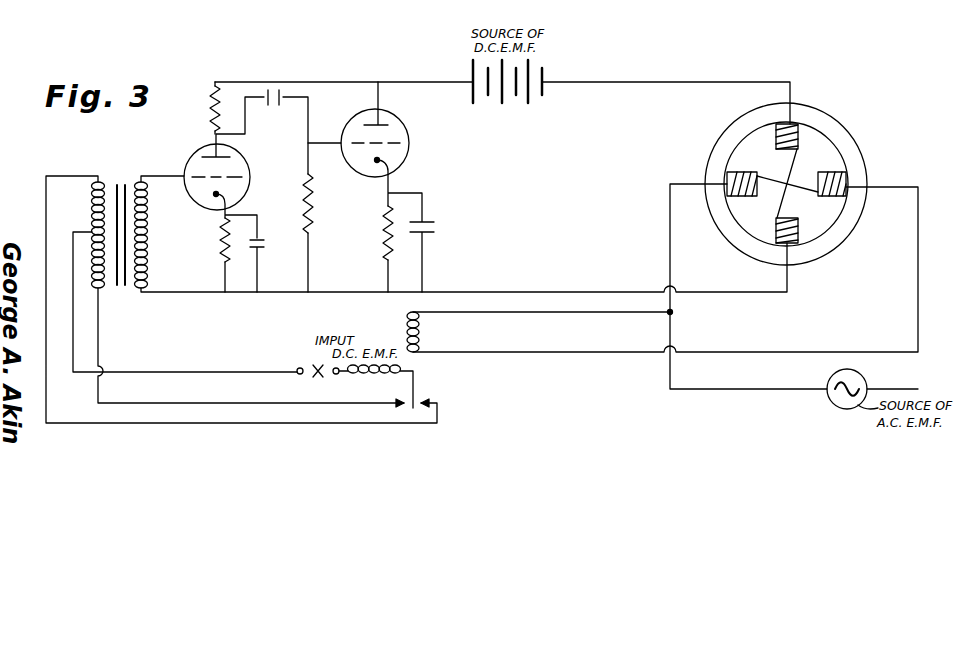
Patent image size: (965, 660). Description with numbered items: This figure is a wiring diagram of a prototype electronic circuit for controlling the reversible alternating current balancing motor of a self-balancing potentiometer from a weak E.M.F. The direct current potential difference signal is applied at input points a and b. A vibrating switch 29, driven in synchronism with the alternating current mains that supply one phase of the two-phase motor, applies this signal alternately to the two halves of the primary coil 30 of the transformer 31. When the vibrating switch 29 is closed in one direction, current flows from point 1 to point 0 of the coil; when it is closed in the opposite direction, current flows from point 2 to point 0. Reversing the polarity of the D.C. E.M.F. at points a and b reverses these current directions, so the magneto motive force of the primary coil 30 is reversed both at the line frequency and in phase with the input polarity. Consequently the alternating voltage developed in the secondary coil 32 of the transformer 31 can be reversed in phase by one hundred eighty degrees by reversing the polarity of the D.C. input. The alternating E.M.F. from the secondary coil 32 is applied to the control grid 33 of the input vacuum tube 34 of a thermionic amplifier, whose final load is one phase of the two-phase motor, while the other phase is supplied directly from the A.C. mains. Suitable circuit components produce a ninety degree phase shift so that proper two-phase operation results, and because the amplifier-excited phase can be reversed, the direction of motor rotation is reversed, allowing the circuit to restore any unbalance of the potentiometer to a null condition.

The primary coil 30 is at (69, 176).
The transformer 31 is at (119, 178).
The secondary coil 32 is at (154, 232).
The control grid 33 is at (219, 176).
The input vacuum tube 34 is at (247, 197).
The vibrating switch 29 is at (414, 386).
The input point a is at (298, 368).
The input point b is at (337, 374).
The center point of primary coil 0 is at (66, 234).
The first end point of primary coil 1 is at (85, 297).
The second end point of primary coil 2 is at (83, 186).